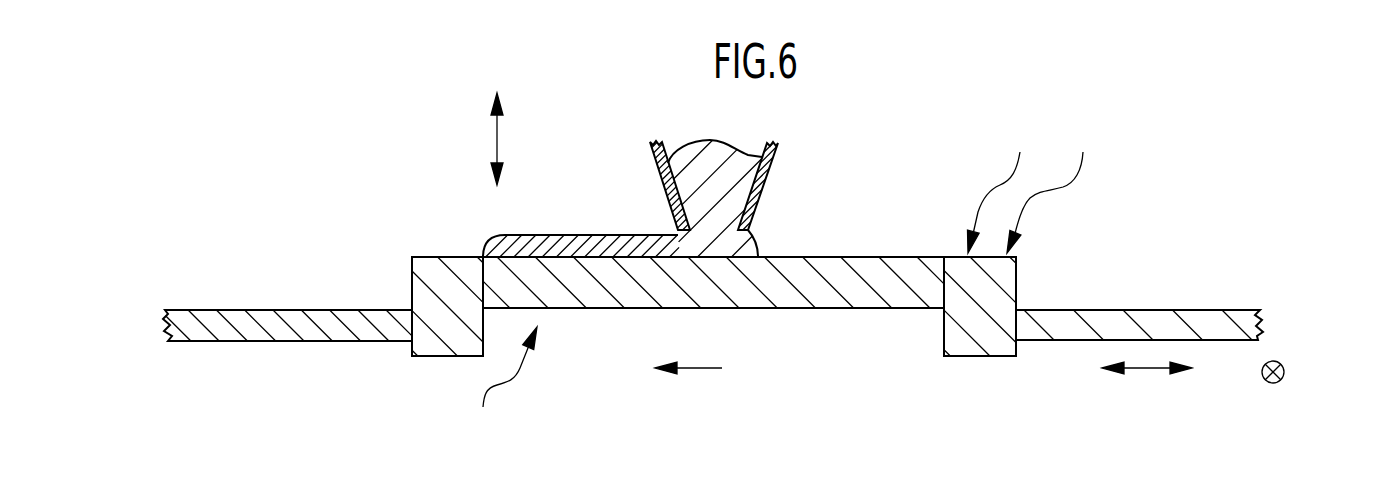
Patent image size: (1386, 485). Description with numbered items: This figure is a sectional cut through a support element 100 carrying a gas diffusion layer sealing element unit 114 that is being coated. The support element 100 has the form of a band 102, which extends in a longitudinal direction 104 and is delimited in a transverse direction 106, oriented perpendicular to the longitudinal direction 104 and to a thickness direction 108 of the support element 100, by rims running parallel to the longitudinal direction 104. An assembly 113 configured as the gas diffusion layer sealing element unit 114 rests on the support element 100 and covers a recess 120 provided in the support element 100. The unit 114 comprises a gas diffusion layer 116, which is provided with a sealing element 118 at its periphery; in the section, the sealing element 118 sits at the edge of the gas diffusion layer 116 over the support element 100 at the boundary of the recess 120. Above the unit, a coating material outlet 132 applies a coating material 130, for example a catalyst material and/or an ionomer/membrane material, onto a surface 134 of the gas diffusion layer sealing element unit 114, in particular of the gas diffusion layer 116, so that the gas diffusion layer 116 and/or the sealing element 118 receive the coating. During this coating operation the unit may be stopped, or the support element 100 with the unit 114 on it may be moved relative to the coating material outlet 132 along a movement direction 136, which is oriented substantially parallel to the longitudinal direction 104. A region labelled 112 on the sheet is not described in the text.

The support element 100 is at (263, 323).
The band 102 is at (1157, 318).
The longitudinal direction 104 is at (1147, 368).
The transverse direction 106 is at (1284, 378).
The thickness direction 108 is at (497, 138).
The substrate edge 112 is at (1228, 316).
The assembly 113 is at (1053, 187).
The gas diffusion layer sealing element unit 114 is at (1002, 187).
The gas diffusion layer 116 is at (847, 295).
The sealing element 118 is at (452, 273).
The recess 120 is at (500, 384).
The coating material 130 is at (713, 181).
The coating material outlet 132 is at (663, 169).
The surface 134 is at (862, 257).
The movement direction 136 is at (700, 368).